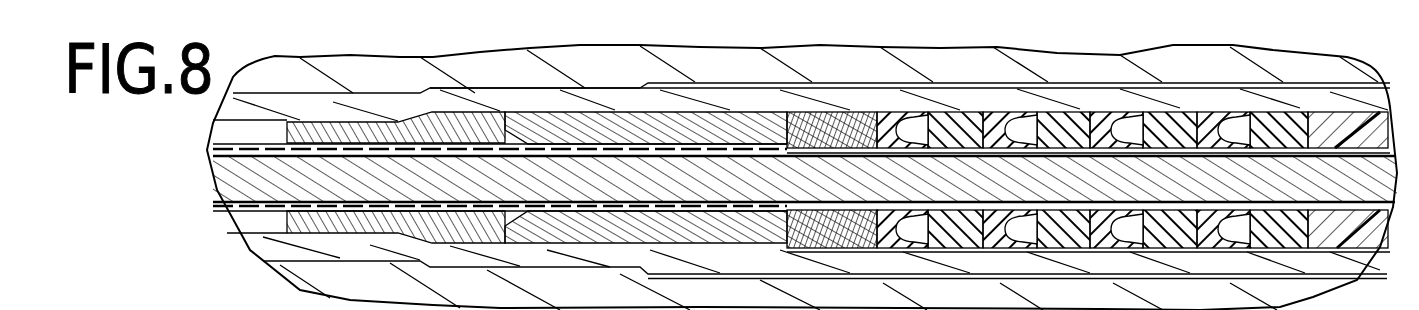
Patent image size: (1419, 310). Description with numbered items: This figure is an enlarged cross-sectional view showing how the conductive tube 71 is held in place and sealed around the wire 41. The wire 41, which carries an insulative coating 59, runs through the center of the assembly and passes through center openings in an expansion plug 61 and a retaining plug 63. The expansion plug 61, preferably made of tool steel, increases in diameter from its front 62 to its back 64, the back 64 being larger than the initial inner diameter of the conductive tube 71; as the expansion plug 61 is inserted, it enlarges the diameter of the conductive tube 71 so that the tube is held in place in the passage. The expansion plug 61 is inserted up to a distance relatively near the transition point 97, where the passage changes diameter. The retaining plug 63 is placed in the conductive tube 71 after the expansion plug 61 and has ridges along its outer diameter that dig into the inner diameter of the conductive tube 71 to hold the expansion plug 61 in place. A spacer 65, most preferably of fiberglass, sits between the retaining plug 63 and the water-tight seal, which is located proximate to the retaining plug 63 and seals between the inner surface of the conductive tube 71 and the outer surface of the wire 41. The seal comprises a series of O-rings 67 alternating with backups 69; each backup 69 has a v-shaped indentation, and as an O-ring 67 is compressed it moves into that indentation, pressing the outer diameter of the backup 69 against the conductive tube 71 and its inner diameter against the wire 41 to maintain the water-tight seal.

The wire 41 is at (232, 172).
The insulative coating 59 is at (232, 135).
The expansion plug 61 is at (325, 137).
The front 62 is at (252, 248).
The retaining plug 63 is at (522, 116).
The back 64 is at (490, 237).
The spacer 65 is at (817, 107).
The O-ring 67 is at (1043, 112).
The backup 69 is at (1017, 250).
The conductive tube 71 is at (605, 90).
The transition point 97 is at (556, 88).